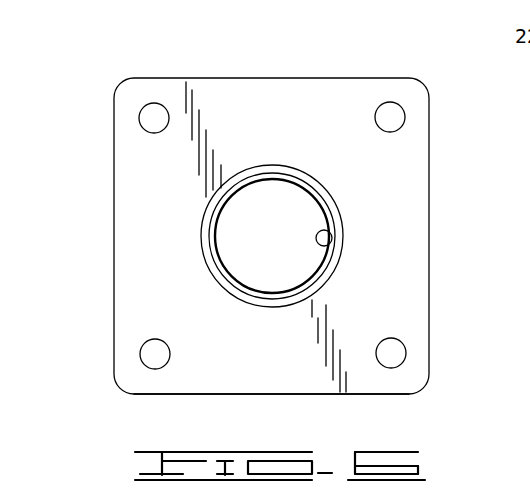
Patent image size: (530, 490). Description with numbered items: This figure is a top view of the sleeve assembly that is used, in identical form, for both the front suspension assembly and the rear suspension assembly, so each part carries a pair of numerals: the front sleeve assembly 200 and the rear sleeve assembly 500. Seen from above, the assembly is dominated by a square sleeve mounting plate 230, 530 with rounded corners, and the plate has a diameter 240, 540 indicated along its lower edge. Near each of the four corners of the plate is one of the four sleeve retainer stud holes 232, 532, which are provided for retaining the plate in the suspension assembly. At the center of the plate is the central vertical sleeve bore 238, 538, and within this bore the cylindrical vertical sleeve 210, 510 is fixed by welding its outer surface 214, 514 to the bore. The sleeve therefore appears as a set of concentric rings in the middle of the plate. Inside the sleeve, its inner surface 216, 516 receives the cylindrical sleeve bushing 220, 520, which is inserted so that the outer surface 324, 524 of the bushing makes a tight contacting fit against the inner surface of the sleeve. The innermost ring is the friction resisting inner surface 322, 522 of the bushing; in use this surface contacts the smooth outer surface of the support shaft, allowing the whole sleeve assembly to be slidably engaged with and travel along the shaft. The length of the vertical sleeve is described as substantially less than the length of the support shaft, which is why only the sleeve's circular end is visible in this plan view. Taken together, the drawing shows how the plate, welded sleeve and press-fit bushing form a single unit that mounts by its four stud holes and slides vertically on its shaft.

The sleeve assembly 200 is at (277, 224).
The sleeve assembly 500 is at (266, 78).
The cylindrical vertical sleeve 210 is at (277, 192).
The cylindrical vertical sleeve 510 is at (328, 190).
The outer surface 214 is at (189, 243).
The outer surface 514 is at (218, 285).
The inner surface 216 is at (365, 256).
The inner surface 516 is at (325, 272).
The cylindrical sleeve bushing 220 is at (178, 236).
The cylindrical sleeve bushing 520 is at (217, 248).
The sleeve mounting plate 230 is at (277, 237).
The sleeve mounting plate 530 is at (162, 195).
The sleeve retainer stud holes 232 is at (219, 208).
The sleeve retainer stud holes 532 is at (153, 117).
The central vertical sleeve bore 238 is at (274, 192).
The central vertical sleeve bore 538 is at (302, 170).
The diameter 240 is at (234, 416).
The diameter 540 is at (182, 394).
The small port 322 is at (416, 238).
The friction resisting inner surface 522 is at (332, 238).
The ring groove 324 is at (365, 256).
The outer surface 524 is at (365, 256).